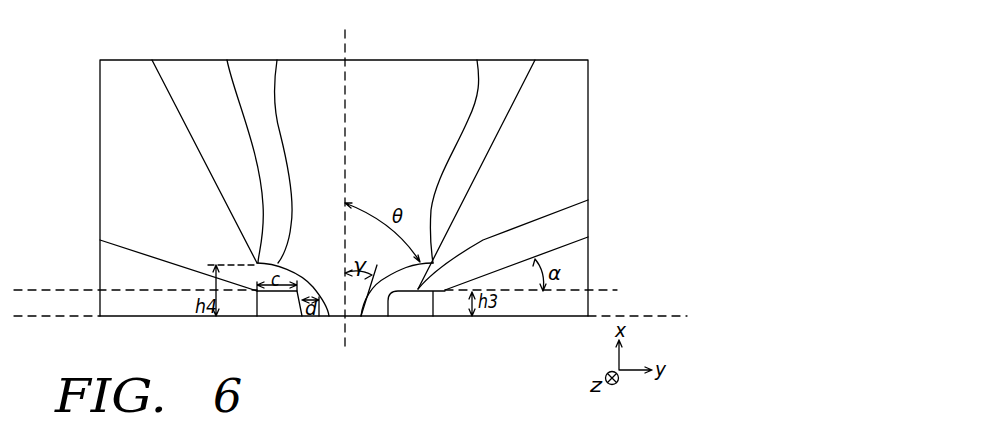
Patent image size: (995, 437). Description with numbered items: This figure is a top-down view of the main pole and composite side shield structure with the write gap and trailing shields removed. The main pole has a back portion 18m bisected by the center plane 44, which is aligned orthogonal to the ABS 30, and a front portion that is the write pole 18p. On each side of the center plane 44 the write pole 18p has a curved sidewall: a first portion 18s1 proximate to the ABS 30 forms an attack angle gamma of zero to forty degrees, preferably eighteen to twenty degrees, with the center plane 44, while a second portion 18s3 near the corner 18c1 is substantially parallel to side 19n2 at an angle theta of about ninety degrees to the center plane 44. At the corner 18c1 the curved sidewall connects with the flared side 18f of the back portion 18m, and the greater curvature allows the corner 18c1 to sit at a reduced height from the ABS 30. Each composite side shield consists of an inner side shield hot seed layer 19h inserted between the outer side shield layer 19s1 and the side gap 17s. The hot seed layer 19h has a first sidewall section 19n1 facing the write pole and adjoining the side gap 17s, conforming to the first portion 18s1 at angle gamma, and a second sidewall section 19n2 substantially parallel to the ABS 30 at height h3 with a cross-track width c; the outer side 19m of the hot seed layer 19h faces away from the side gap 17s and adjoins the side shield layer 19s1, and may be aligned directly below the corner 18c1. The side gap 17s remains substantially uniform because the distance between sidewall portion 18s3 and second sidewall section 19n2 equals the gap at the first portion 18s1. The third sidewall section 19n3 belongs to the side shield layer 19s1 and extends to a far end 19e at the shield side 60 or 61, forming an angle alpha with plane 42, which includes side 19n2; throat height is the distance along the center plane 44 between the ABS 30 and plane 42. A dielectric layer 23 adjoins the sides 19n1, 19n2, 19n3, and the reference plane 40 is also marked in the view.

The side gap 17s is at (378, 310).
The corner 18c1 is at (227, 60).
The second portion of curved write pole sidewall 18s3 is at (277, 60).
The first portion of curved write pole sidewall 18s1 is at (320, 308).
The flared side 18f is at (167, 90).
The main pole back portion 18m is at (408, 83).
The write pole 18p is at (360, 293).
The side shield layer 19s1 is at (117, 270).
The outer side 19m is at (252, 305).
The side shield hot seed layer 19h is at (287, 307).
The first sidewall section 19n1 is at (388, 320).
The second sidewall section 19n2 is at (547, 220).
The third sidewall section 19n3 is at (157, 262).
The far end 19e is at (588, 237).
The dielectric layer 23 is at (117, 135).
The ABS 30 is at (706, 317).
The reference plane 40 is at (343, 318).
The plane 42- 42 is at (323, 292).
The center plane 44 is at (344, 192).
The side of the side shield 60 is at (100, 217).
The side of the side shield 61 is at (590, 212).